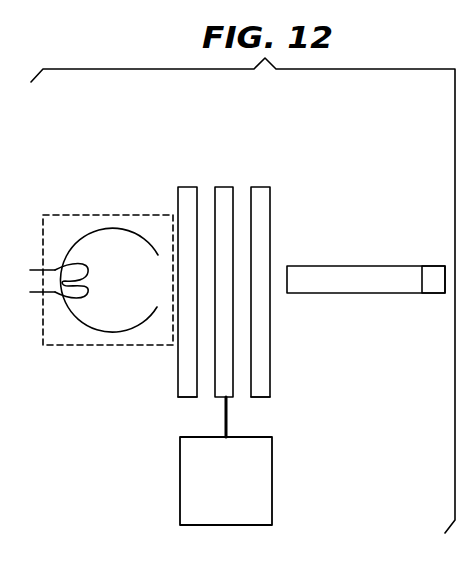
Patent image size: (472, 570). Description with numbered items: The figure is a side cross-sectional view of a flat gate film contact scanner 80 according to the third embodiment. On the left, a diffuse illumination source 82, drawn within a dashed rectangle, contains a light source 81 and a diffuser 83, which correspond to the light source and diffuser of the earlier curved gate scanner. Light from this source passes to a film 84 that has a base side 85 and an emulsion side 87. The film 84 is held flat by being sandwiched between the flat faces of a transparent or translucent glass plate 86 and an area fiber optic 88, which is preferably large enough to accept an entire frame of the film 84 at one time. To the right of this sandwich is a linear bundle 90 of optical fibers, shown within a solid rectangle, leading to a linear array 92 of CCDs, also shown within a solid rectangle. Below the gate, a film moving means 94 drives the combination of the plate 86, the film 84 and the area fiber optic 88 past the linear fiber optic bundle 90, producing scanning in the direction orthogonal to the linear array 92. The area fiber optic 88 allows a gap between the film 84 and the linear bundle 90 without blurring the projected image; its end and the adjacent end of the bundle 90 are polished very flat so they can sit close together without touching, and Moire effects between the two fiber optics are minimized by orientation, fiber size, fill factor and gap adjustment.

The flat gate film contact scanner 80 is at (329, 109).
The light source 81 is at (60, 275).
The diffuse illumination source 82 is at (107, 214).
The diffuser 83 is at (108, 345).
The film 84 is at (225, 186).
The base side 85 is at (213, 192).
The transparent or translucent plate 86 is at (198, 383).
The emulsion side 87 is at (233, 197).
The area fiber optic 88 is at (262, 390).
The linear bundle of optical fibers 90 is at (342, 278).
The linear array of CCDs 92 is at (433, 275).
The film moving means 94 is at (272, 485).